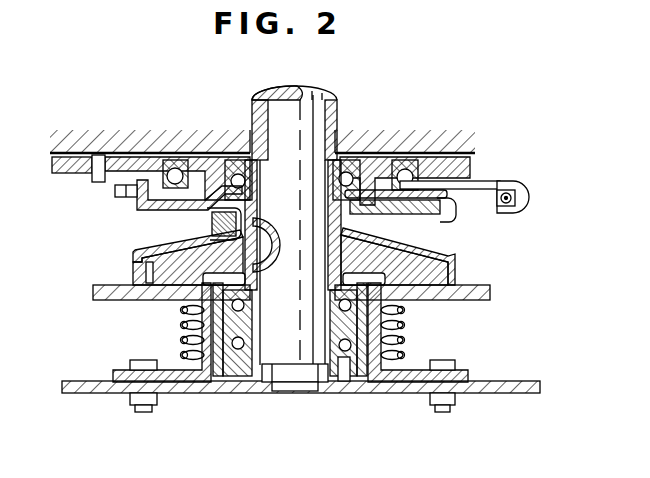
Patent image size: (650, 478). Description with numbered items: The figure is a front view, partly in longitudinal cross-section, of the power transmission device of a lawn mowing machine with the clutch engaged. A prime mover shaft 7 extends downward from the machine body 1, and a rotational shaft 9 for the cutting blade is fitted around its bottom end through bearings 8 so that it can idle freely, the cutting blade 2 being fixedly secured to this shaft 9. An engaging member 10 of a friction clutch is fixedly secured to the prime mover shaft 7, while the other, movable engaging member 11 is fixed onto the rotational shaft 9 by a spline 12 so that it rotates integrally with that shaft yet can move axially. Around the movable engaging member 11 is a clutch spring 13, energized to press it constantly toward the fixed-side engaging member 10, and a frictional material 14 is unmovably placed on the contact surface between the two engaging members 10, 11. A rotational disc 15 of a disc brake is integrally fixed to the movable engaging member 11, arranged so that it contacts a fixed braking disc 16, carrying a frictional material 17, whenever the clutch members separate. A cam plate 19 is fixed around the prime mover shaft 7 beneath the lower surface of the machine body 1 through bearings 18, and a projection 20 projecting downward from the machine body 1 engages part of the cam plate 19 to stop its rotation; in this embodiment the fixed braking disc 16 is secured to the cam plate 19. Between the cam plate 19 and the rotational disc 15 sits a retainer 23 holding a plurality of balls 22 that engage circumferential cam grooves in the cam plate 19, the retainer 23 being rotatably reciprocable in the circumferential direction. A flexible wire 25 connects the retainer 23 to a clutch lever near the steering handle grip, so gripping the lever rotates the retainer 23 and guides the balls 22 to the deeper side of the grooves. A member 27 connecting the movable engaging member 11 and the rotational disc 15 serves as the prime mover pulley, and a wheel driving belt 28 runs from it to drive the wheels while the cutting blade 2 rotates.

The machine body 1 is at (479, 152).
The cutting blade 2 is at (489, 395).
The prime mover shaft 7 is at (265, 112).
The bearings 8 is at (345, 393).
The rotational shaft for cutting blade 9 is at (238, 380).
The engaging member 10 is at (145, 263).
The movable engaging member 11 is at (128, 300).
The spline 12 is at (208, 378).
The clutch spring 13 is at (183, 326).
The frictional material 14 is at (437, 301).
The rotational disc 15 is at (447, 192).
The fixed braking disc 16 is at (447, 212).
The frictional material 17 is at (396, 207).
The bearings 18 is at (347, 170).
The cam plate 19 is at (430, 156).
The projection 20 is at (96, 182).
The balls 22 is at (176, 167).
The retainer 23 is at (153, 182).
The flexible wire 25 is at (506, 195).
The connecting member 27 is at (162, 252).
The wheel driving belt 28 is at (207, 229).